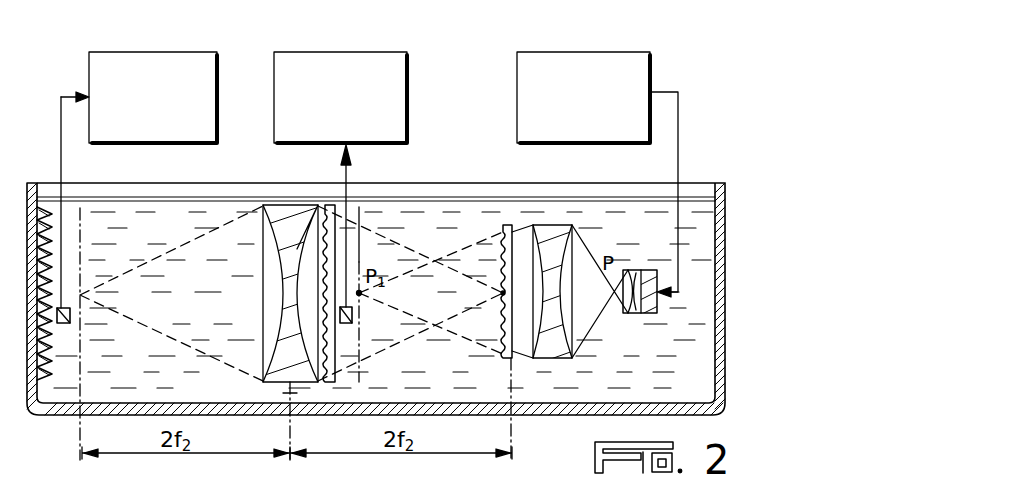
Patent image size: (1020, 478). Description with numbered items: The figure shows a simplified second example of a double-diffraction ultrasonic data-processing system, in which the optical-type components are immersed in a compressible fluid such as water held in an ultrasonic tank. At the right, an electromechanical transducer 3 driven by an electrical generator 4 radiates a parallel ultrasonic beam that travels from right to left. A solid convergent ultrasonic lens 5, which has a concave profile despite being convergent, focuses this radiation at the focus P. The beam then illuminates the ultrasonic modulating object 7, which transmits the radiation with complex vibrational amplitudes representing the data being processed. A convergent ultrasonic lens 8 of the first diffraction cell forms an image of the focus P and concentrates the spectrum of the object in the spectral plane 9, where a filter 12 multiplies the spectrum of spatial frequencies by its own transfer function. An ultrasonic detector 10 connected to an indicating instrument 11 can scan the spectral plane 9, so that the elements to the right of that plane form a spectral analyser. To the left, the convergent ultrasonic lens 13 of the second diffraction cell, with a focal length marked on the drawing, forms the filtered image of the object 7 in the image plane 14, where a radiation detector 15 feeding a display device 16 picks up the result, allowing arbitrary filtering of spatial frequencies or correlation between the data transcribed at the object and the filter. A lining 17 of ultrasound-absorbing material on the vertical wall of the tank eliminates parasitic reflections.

The electromechanical transducer 3 is at (655, 313).
The electrical generator 4 is at (611, 52).
The convergent ultrasonic lens 5 is at (630, 313).
The ultrasonic modulating object 7 is at (503, 355).
The convergent ultrasonic lens 8 is at (552, 358).
The spectral plane 9 is at (359, 214).
The ultrasonic detector 10 is at (346, 323).
The indicating instrument 11 is at (372, 52).
The filter 12 is at (333, 378).
The convergent ultrasonic lens 13 is at (262, 360).
The image plane 14 is at (80, 372).
The radiation detector 15 is at (66, 323).
The display device 16 is at (183, 52).
The lining 17 is at (52, 352).